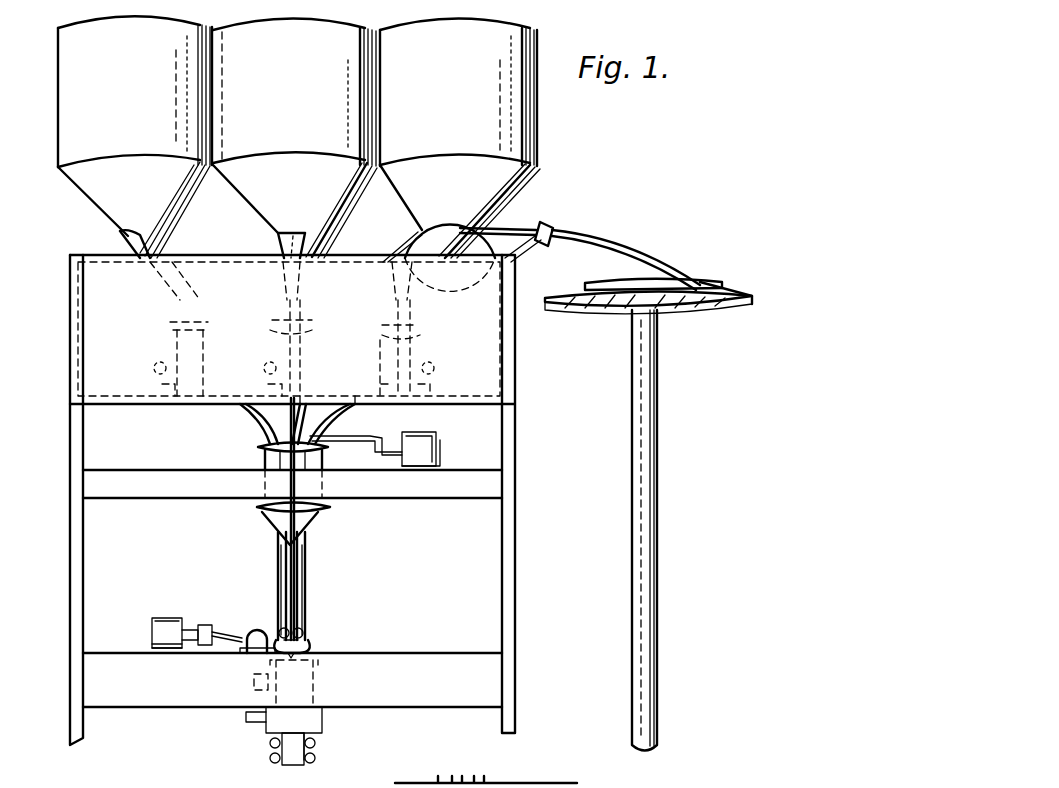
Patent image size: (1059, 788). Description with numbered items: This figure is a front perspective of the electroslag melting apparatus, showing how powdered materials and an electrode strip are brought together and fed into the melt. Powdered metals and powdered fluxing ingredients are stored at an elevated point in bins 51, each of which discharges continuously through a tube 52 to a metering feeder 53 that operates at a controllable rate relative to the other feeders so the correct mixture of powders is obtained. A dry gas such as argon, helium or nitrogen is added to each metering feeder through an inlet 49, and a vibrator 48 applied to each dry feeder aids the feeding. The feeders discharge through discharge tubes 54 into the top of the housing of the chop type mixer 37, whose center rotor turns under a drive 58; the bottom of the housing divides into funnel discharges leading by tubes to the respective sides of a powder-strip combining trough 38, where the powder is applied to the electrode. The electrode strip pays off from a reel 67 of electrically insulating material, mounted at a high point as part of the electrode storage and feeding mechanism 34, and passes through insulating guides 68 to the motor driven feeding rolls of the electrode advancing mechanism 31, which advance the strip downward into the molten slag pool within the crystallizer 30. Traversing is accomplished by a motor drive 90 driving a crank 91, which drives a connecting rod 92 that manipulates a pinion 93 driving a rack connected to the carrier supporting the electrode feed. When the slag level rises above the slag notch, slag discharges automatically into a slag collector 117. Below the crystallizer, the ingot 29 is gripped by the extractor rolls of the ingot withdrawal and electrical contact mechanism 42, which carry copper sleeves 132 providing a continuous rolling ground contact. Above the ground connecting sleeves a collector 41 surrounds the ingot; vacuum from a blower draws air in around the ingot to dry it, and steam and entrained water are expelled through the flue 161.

The bin 51 is at (462, 70).
The tube 52 is at (282, 310).
The inlet 49 is at (274, 333).
The vibrator 48 is at (154, 366).
The metering feeder 53 is at (386, 356).
The discharge tube 54 is at (262, 420).
The powder mixing mechanism 37 is at (265, 460).
The drive 58 is at (440, 446).
The insulating guide 68 is at (558, 220).
The electrode storage and feeding mechanism 34 is at (606, 306).
The reel 67 is at (700, 312).
The motor drive 90 is at (166, 620).
The crank 91 is at (202, 628).
The connecting rod 92 is at (222, 628).
The pinion 93 is at (260, 628).
The electrode advancing mechanism 31 is at (310, 632).
The powder-strip combining trough 38 is at (318, 652).
The slag collector 117 is at (252, 682).
The crystallizer 30 is at (316, 688).
The flue 161 is at (246, 716).
The collector 41 is at (328, 726).
The ingot withdrawal and electrical contact mechanism 42 is at (312, 742).
The ingot 29 is at (285, 765).
The copper sleeve 132 is at (312, 762).